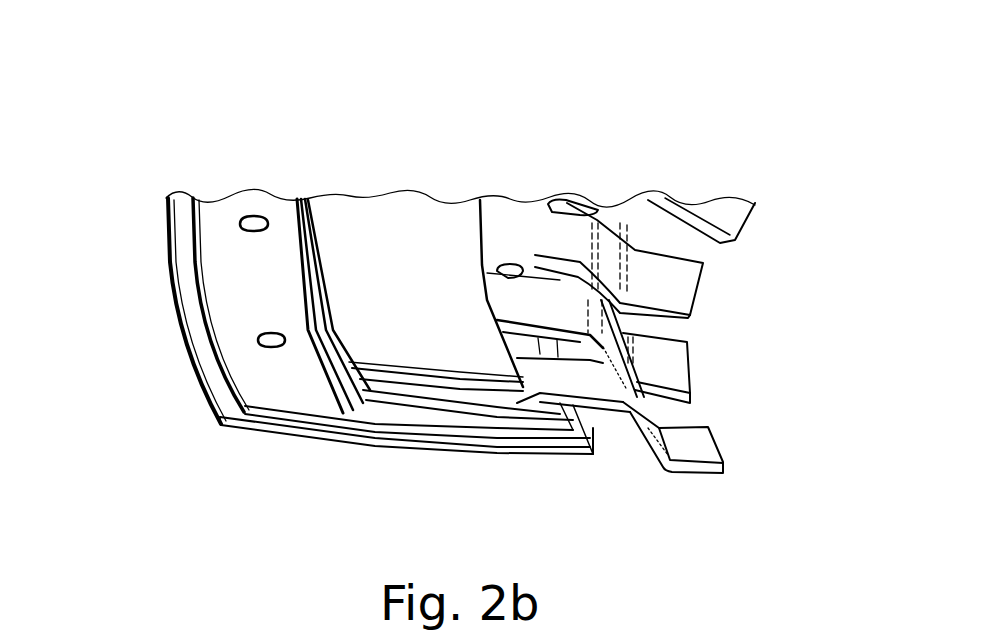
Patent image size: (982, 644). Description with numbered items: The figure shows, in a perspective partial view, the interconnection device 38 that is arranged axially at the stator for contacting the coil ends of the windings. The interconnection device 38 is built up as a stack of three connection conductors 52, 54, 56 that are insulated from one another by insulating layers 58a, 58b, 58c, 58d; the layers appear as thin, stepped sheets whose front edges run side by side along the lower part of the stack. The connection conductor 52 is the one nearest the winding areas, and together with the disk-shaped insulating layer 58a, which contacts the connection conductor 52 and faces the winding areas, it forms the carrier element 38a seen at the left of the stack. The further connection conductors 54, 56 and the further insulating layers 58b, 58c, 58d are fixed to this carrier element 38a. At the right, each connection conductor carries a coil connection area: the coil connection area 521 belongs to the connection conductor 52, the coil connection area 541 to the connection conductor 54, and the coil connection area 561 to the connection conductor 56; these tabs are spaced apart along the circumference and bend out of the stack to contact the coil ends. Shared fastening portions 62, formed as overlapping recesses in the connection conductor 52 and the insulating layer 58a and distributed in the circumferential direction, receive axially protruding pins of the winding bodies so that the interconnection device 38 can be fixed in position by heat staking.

The interconnection device 38 is at (380, 153).
The carrier element 38a is at (166, 184).
The connection conductor 52 is at (212, 222).
The connection conductor 54 is at (417, 403).
The connection conductor 56 is at (473, 392).
The insulating layer 58a is at (230, 423).
The insulating layer 58b is at (352, 412).
The insulating layer 58c is at (382, 400).
The insulating layer 58d is at (443, 230).
The shared fastening portions 62 is at (262, 338).
The coil connection area 521 is at (670, 283).
The coil connection area 541 is at (658, 358).
The coil connection area 561 is at (695, 446).